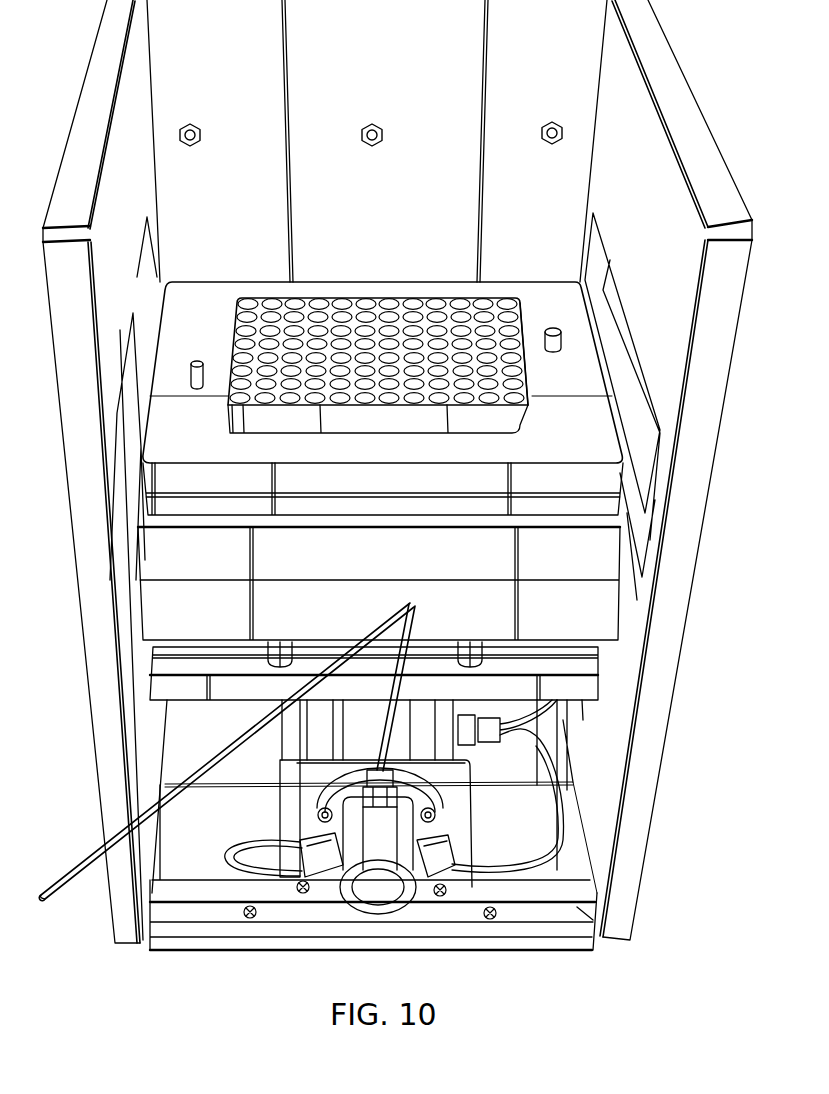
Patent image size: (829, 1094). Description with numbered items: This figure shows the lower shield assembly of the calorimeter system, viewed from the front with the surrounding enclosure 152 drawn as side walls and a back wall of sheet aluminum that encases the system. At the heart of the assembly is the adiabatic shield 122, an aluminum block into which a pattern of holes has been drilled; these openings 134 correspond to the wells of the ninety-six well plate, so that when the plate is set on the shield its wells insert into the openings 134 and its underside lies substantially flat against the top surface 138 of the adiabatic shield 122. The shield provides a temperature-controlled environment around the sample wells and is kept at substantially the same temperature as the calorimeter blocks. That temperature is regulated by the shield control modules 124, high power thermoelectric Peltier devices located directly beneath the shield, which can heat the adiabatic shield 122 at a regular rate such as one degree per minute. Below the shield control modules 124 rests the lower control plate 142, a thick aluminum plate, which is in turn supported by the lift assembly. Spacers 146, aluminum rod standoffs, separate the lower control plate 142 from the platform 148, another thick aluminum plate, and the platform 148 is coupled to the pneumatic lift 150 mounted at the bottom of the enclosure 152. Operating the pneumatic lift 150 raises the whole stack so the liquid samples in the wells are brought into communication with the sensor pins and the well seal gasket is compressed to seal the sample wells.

The adiabatic shield 122 is at (553, 326).
The shield control modules 124 is at (543, 522).
The openings 134 is at (528, 352).
The top surface 138 is at (267, 297).
The lower control plate 142 is at (336, 549).
The spacers 146 is at (458, 656).
The platform 148 is at (588, 685).
The pneumatic lift 150 is at (292, 812).
The enclosure 152 is at (379, 93).